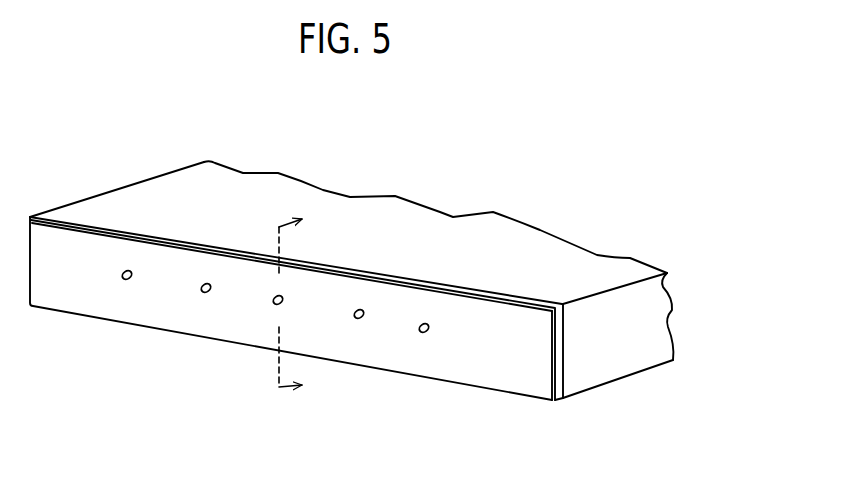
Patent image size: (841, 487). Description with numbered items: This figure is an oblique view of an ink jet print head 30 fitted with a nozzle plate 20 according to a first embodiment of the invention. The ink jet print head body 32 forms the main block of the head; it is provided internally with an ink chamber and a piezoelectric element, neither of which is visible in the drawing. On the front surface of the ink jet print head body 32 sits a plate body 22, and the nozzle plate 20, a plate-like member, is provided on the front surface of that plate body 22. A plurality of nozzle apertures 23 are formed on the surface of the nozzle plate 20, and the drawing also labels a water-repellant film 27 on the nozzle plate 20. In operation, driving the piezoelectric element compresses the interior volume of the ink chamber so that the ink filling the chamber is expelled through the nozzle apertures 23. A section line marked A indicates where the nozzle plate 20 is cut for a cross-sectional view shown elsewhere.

The ink jet print head 30 is at (415, 118).
The ink jet print head body 32 is at (472, 227).
The nozzle plate 20 is at (391, 348).
The plate body 22 is at (563, 360).
The water-repellant film 27 is at (540, 382).
The nozzle apertures 23 is at (275, 304).